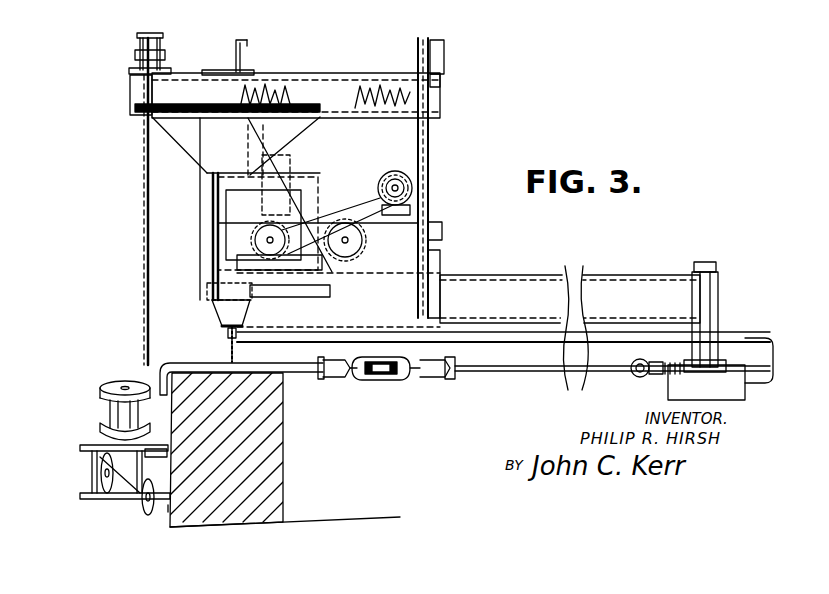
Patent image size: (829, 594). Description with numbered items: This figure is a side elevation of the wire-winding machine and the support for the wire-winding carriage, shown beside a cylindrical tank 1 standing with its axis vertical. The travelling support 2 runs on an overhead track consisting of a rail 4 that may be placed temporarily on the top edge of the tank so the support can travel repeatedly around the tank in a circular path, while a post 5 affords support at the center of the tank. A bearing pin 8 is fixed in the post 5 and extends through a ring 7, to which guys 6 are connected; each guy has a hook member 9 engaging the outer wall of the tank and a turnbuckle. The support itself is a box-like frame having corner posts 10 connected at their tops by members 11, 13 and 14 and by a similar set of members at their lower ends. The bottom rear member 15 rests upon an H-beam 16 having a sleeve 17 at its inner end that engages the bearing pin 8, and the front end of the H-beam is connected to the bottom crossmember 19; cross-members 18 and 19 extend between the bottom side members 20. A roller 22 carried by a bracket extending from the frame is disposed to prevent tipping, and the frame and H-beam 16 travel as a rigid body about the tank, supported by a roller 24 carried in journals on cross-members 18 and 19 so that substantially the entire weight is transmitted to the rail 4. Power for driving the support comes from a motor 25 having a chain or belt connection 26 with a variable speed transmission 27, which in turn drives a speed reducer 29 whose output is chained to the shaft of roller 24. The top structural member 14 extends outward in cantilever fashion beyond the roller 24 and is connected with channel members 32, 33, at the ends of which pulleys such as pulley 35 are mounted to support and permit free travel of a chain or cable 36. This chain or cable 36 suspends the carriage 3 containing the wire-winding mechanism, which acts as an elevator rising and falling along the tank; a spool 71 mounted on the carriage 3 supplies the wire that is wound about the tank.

The cylindrical tank 1 is at (266, 487).
The travelling support 2 is at (438, 178).
The carriage 3 is at (80, 465).
The rail 4 is at (237, 347).
The post 5 is at (672, 392).
The guys 6 is at (497, 373).
The ring 7 is at (748, 360).
The bearing pin 8 is at (718, 266).
The hook member 9 is at (187, 357).
The corner posts 10 is at (226, 180).
The member 11 is at (445, 58).
The member 13 is at (236, 56).
The top structural member 14 is at (361, 90).
The bottom rear member 15 is at (440, 250).
The H-beam 16 is at (532, 284).
The sleeve 17 is at (721, 298).
The cross-member 18 is at (212, 287).
The bottom crossmember 19 is at (262, 296).
The bottom side member 20 is at (363, 300).
The roller 22 is at (224, 315).
The roller 24 is at (230, 340).
The motor 25 is at (394, 170).
The chain or belt connection 26 is at (380, 204).
The variable speed transmission 27 is at (312, 222).
The speed reducer 29 is at (288, 170).
The channel member 32 is at (138, 45).
The channel member 33 is at (162, 46).
The pulley 35 is at (148, 34).
The chain or cable 36 is at (146, 238).
The spool 71 is at (115, 402).